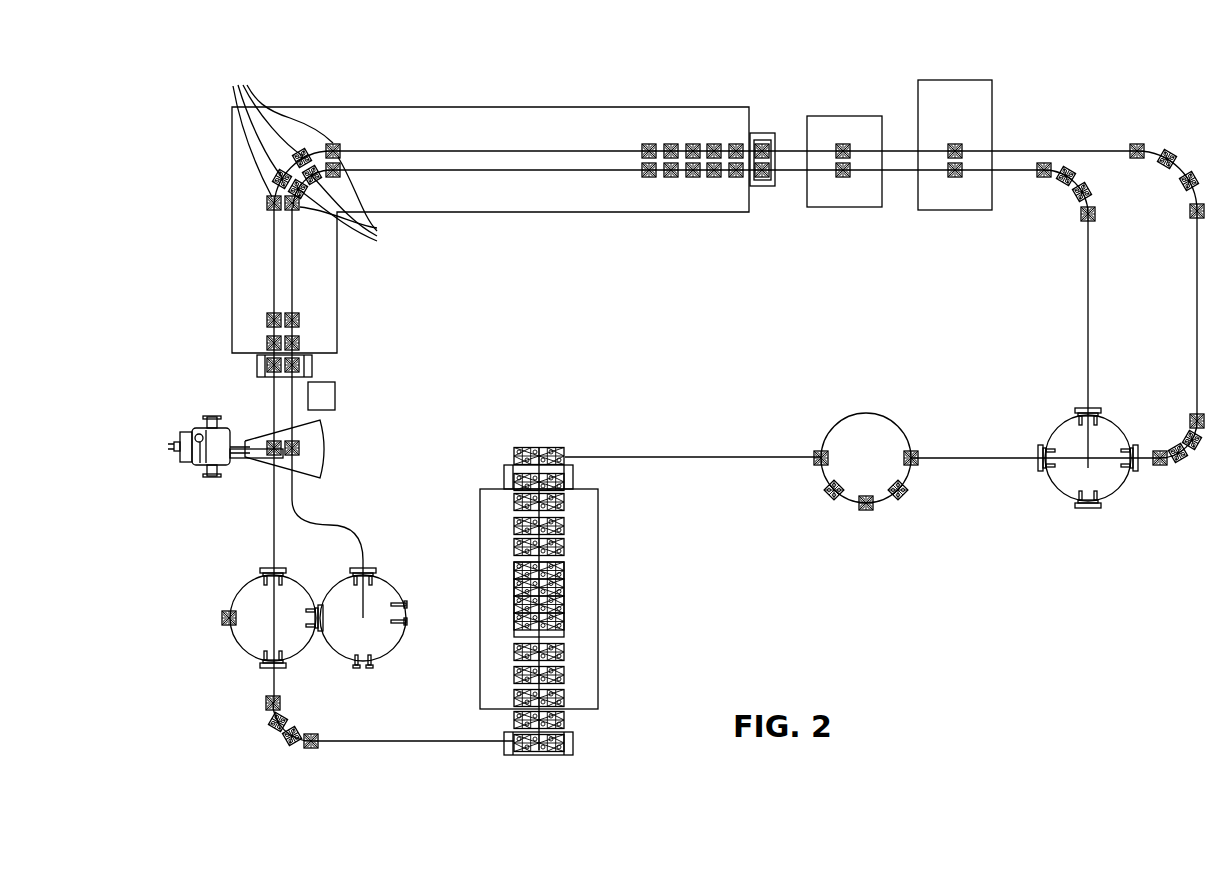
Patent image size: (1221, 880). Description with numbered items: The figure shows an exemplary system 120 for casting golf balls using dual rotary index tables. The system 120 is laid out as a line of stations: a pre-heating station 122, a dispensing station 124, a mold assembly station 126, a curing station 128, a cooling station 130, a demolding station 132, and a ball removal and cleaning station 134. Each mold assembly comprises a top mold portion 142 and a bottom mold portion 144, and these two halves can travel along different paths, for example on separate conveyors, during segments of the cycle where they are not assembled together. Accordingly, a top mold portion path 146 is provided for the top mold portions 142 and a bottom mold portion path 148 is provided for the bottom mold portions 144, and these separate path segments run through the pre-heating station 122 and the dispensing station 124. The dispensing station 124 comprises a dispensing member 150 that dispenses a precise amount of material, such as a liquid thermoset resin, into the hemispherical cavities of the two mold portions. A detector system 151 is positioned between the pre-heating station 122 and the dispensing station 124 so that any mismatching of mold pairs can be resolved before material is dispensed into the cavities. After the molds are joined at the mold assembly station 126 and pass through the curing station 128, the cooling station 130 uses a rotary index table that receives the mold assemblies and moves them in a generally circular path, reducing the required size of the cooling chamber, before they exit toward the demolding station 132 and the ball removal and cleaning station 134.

The system for casting golf balls 120 is at (773, 574).
The pre-heating station 122 is at (453, 104).
The dispensing station 124 is at (172, 441).
The mold assembly station 126 is at (236, 648).
The curing station 128 is at (600, 622).
The cooling station 130 is at (822, 421).
The demolding station 132 is at (1118, 500).
The ball removal and cleaning station 134 is at (1000, 78).
The top mold portion 142 is at (281, 136).
The bottom mold portion 144 is at (356, 203).
The top mold portion path 146 is at (539, 150).
The bottom mold portion path 148 is at (539, 172).
The dispensing member 150 is at (258, 440).
The detector system 151 is at (336, 394).